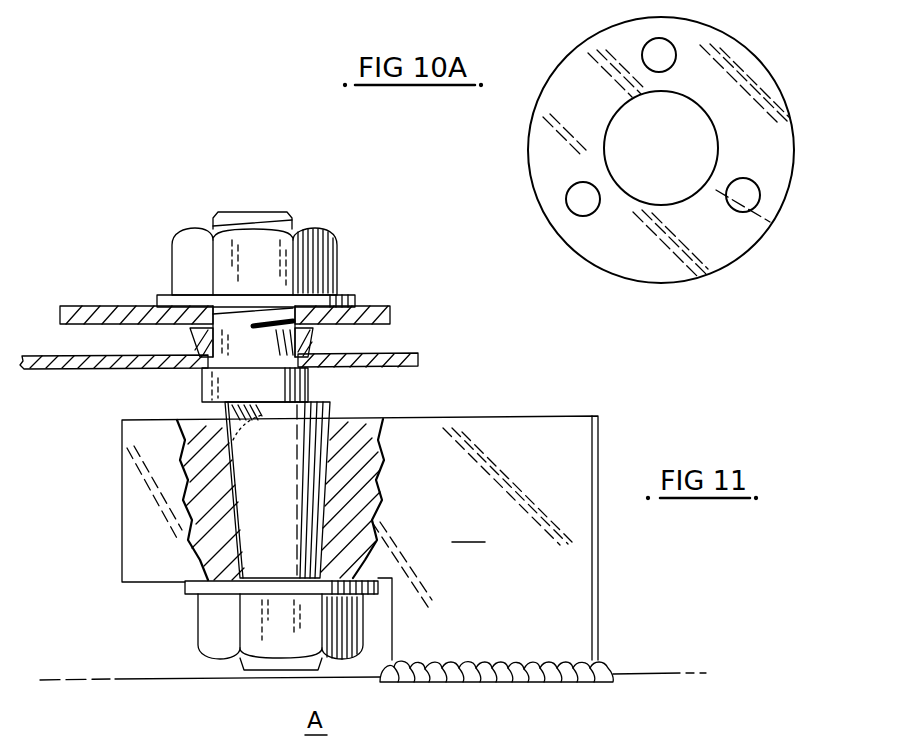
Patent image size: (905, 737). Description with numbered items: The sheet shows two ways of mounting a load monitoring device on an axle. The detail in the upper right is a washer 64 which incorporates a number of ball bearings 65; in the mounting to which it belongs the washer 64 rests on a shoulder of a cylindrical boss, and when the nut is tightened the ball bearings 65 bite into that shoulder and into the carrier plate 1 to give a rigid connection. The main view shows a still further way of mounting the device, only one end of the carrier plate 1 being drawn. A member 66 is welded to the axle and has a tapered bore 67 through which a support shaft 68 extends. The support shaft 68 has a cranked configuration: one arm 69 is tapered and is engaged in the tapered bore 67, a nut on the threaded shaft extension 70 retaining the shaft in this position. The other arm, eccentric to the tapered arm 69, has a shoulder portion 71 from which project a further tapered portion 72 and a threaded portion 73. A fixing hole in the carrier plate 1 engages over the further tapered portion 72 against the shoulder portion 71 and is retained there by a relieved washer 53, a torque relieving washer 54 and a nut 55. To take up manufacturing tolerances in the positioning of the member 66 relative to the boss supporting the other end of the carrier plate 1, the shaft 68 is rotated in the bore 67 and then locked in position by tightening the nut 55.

In FIG. 11, the carrier plate 1 is at (52, 357).
In FIG. 11, the relieved washer 53 is at (126, 306).
In FIG. 11, the torque relieving washer 54 is at (352, 302).
In FIG. 11, the nut 55 is at (330, 274).
In FIG. 10A, the washer 64 is at (546, 191).
In FIG. 10A, the ball bearings 65 is at (728, 200).
In FIG. 11, the member 66 is at (367, 549).
In FIG. 11, the tapered bore 67 is at (232, 474).
In FIG. 11, the support shaft 68 is at (312, 455).
In FIG. 11, the tapered arm 69 is at (305, 497).
In FIG. 11, the threaded shaft extension 70 is at (255, 668).
In FIG. 11, the shoulder portion 71 is at (203, 384).
In FIG. 11, the further tapered portion 72 is at (300, 348).
In FIG. 11, the threaded portion 73 is at (230, 212).